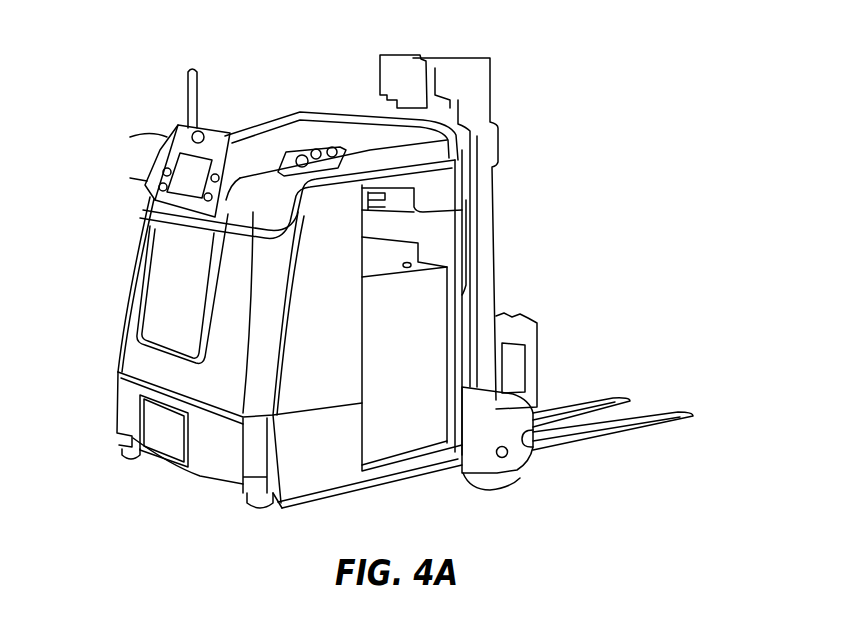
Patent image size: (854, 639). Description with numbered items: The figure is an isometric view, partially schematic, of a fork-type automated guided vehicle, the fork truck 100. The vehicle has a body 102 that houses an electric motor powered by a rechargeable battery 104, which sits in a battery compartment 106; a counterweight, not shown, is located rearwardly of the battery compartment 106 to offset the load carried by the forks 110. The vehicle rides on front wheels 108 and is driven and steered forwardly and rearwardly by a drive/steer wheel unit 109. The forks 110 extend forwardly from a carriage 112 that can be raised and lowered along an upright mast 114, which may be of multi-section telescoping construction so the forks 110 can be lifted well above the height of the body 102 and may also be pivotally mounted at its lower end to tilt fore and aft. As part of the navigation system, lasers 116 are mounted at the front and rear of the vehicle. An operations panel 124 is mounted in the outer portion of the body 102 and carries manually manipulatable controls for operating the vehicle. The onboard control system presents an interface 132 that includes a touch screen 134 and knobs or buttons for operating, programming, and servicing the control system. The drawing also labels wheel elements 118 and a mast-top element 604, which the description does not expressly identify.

The fork truck 100 is at (547, 33).
The body 102 is at (118, 266).
The rechargeable battery 104 is at (393, 417).
The battery compartment 106 is at (435, 236).
The front wheels 108 is at (507, 480).
The drive/steer wheel unit 109 is at (201, 485).
The forks 110 is at (716, 388).
The carriage 112 is at (538, 355).
The mast 114 is at (497, 98).
The lasers 116 is at (530, 447).
The wheels 118 is at (119, 434).
The operations panel 124 is at (317, 150).
The interface 132 is at (168, 141).
The touch screen 134 is at (193, 173).
The antenna 604 is at (190, 83).